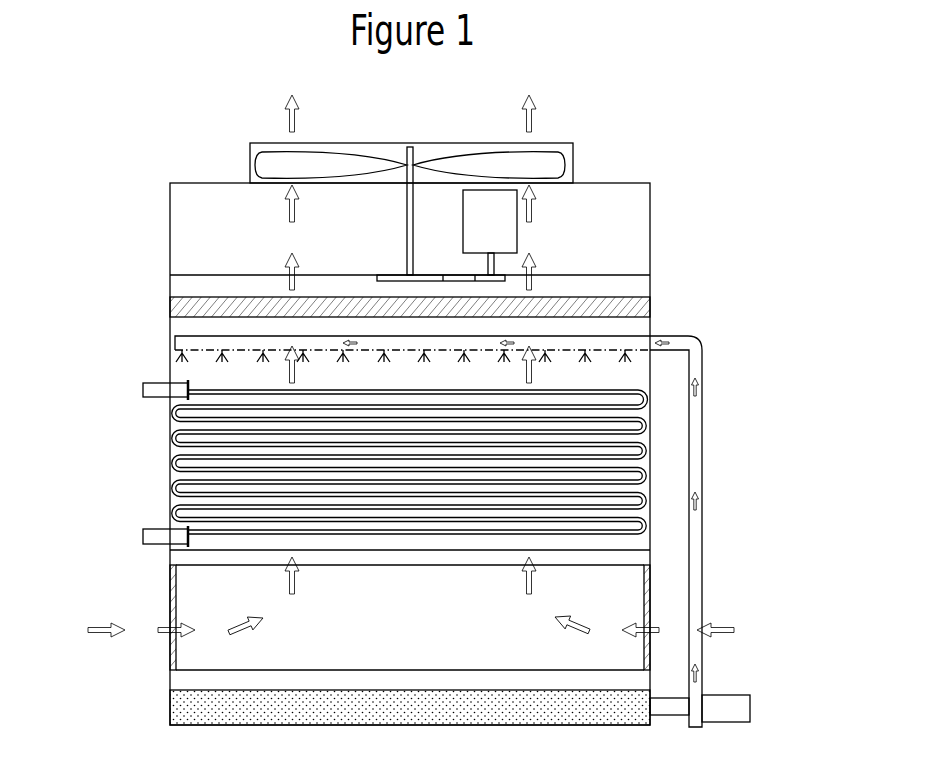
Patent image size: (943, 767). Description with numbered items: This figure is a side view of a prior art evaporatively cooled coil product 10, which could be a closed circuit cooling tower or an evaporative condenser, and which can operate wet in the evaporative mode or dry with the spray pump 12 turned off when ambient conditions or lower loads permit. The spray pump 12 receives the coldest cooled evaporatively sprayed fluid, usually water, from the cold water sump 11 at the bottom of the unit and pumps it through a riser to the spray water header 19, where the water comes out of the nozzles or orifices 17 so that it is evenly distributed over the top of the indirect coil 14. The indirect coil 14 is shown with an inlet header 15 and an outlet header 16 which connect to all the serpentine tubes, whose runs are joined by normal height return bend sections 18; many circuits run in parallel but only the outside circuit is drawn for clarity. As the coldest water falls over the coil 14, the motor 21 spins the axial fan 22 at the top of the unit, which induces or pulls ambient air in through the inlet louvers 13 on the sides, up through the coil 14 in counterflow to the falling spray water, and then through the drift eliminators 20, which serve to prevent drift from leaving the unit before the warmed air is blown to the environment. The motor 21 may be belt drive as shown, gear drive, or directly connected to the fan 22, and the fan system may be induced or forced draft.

The evaporatively cooled coil product 10 is at (158, 182).
The cold water sump 11 is at (168, 708).
The spray pump 12 is at (750, 700).
The inlet louvers 13 is at (168, 598).
The indirect coil 14 is at (170, 488).
The inlet header 15 is at (143, 388).
The outlet header 16 is at (143, 533).
The nozzles or orifices 17 is at (182, 352).
The return bend sections 18 is at (637, 402).
The spray water header 19 is at (638, 345).
The drift eliminators 20 is at (613, 295).
The motor 21 is at (517, 225).
The fan 22 is at (280, 165).